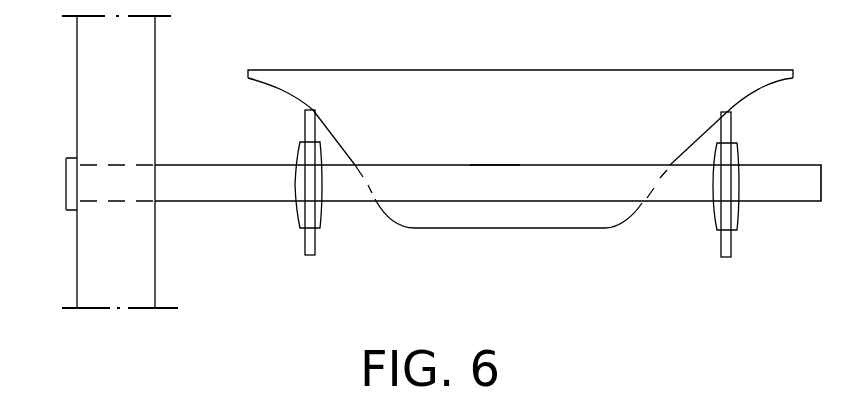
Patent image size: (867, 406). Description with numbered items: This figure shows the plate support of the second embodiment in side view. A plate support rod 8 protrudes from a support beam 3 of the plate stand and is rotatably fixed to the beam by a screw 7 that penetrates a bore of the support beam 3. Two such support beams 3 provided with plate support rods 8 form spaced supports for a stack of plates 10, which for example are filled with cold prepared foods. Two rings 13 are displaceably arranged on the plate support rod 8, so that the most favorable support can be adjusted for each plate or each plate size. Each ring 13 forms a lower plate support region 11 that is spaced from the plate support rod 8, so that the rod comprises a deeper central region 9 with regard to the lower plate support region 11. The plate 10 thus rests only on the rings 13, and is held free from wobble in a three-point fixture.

The support beam 3 is at (101, 109).
The screw 7 is at (73, 197).
The plate support rod 8 is at (256, 188).
The deeper central region 9 is at (492, 162).
The plate 10 is at (586, 118).
The lower plate support region 11 is at (313, 110).
The ring 13 is at (308, 135).